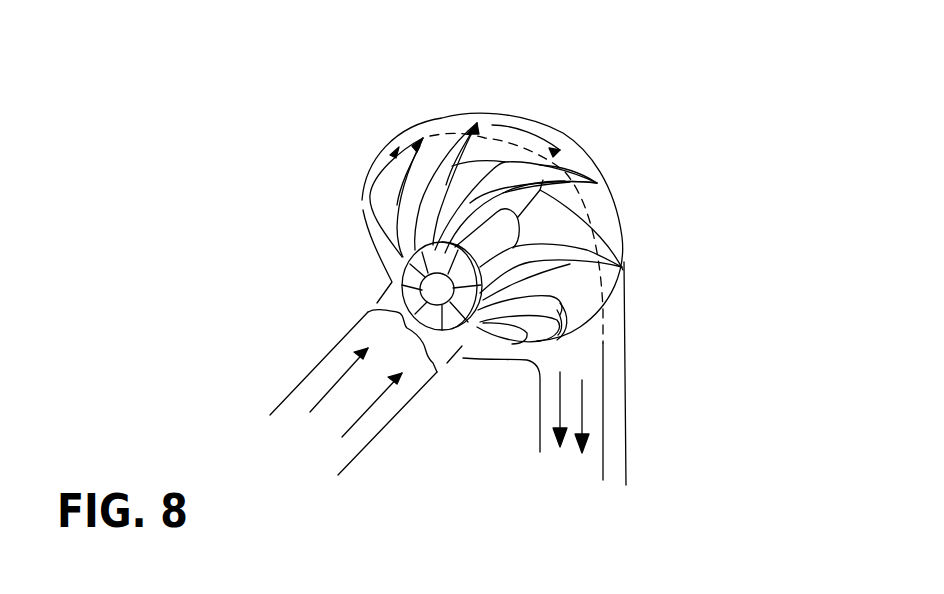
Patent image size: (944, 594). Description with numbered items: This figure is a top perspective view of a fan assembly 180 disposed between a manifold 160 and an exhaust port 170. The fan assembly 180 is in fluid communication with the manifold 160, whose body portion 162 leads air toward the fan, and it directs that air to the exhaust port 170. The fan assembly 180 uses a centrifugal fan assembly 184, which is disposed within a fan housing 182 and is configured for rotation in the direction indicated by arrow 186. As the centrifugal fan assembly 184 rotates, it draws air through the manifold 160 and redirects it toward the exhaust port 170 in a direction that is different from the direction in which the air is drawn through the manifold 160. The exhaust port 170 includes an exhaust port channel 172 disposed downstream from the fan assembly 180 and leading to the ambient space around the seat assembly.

The manifold 160 is at (338, 323).
The body portion 162 is at (340, 406).
The exhaust port 170 is at (626, 368).
The exhaust port channel 172 is at (592, 393).
The fan assembly 180 is at (595, 150).
The fan housing 182 is at (611, 193).
The centrifugal fan assembly 184 is at (577, 236).
The arrow 186 is at (533, 132).